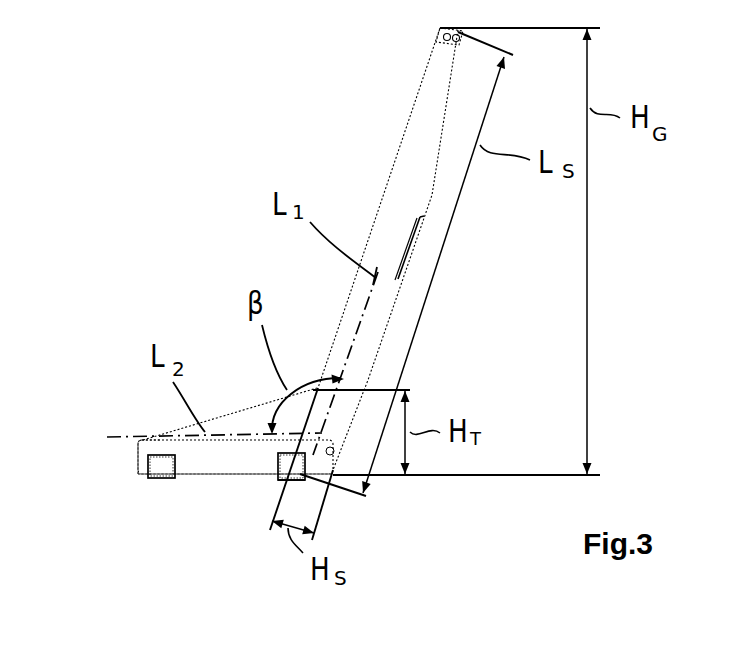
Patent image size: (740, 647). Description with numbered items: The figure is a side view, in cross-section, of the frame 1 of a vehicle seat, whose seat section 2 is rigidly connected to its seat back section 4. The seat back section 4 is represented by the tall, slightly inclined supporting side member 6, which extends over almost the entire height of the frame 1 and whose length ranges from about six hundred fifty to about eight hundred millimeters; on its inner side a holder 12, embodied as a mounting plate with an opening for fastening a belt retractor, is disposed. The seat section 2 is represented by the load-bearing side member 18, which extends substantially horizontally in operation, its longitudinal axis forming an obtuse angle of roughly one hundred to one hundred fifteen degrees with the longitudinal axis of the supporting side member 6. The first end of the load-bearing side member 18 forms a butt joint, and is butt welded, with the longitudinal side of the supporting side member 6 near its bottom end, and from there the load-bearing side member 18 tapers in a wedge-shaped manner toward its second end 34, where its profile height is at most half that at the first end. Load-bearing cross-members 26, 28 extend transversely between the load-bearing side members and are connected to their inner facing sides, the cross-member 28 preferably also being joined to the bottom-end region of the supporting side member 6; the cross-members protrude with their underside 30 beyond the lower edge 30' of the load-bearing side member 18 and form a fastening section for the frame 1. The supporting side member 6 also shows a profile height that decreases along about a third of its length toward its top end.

The frame 1 is at (172, 160).
The seat section 2 is at (80, 510).
The seat back section 4 is at (358, 70).
The supporting side member 6 is at (398, 174).
The holder 12 is at (407, 250).
The load-bearing side member 18 is at (240, 420).
The load-bearing cross-member 26 is at (148, 478).
The load-bearing cross-member 28 is at (262, 470).
The underside 30 is at (147, 508).
The lower edge 30' is at (246, 507).
The second end 34 is at (121, 451).